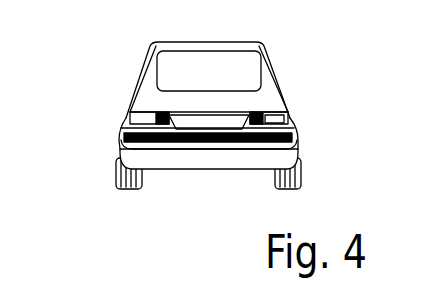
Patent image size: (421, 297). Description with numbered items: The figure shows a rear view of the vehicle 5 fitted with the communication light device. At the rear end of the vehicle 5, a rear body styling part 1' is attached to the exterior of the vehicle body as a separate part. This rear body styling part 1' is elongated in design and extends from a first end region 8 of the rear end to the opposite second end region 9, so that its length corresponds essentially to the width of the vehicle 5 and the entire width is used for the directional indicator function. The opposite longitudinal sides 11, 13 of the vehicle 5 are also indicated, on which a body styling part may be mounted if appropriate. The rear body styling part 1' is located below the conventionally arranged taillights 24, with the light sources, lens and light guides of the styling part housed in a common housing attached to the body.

The vehicle 5 is at (96, 46).
The longitudinal side 13 is at (292, 100).
The longitudinal side 11 is at (126, 110).
The taillight 24 is at (272, 119).
The second end region 9 is at (325, 157).
The first end region 8 is at (110, 146).
The rear body styling part 1' is at (208, 186).